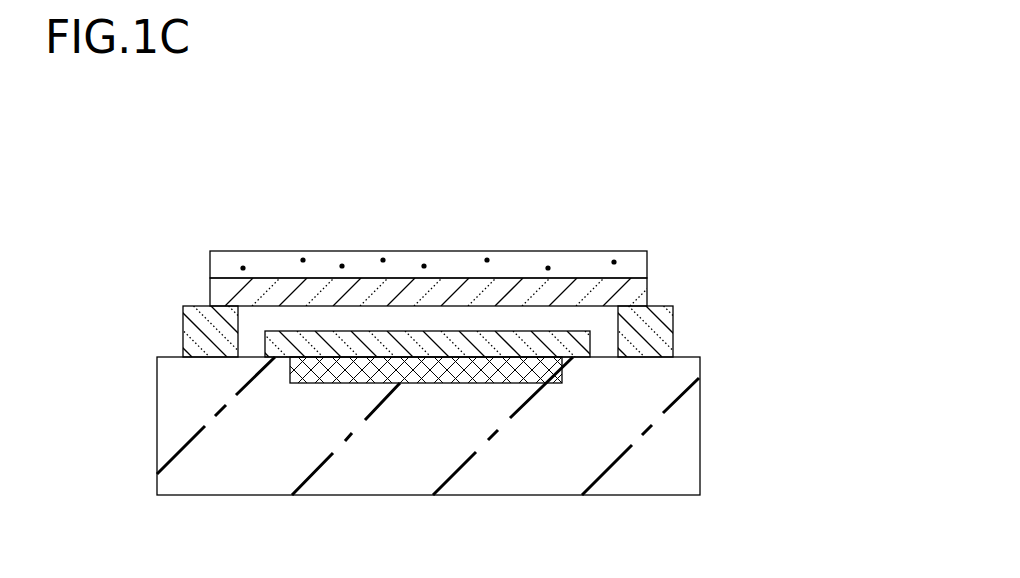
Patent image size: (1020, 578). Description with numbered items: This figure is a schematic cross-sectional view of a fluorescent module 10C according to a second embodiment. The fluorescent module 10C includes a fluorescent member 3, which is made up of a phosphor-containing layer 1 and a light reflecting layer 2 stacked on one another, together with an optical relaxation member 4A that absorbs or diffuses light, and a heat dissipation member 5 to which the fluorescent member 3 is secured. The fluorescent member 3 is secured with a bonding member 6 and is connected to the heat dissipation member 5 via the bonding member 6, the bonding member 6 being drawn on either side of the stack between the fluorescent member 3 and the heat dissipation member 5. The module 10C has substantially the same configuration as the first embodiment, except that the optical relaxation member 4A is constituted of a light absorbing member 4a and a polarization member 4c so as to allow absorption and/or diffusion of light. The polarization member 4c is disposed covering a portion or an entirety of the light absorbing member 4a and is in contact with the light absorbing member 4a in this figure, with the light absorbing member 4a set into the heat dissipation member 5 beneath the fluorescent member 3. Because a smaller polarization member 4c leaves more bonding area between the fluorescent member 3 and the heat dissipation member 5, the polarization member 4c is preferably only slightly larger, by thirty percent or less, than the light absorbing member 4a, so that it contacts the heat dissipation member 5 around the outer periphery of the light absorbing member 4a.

The fluorescent module 10C is at (680, 246).
The heat dissipation member 5 is at (682, 430).
The bonding member 6 is at (647, 334).
The optical relaxation member 4A is at (385, 152).
The light absorbing member 4a is at (340, 372).
The polarization member 4c is at (407, 347).
The fluorescent member 3 is at (570, 167).
The phosphor-containing layer 1 is at (500, 265).
The light reflecting layer 2 is at (588, 290).